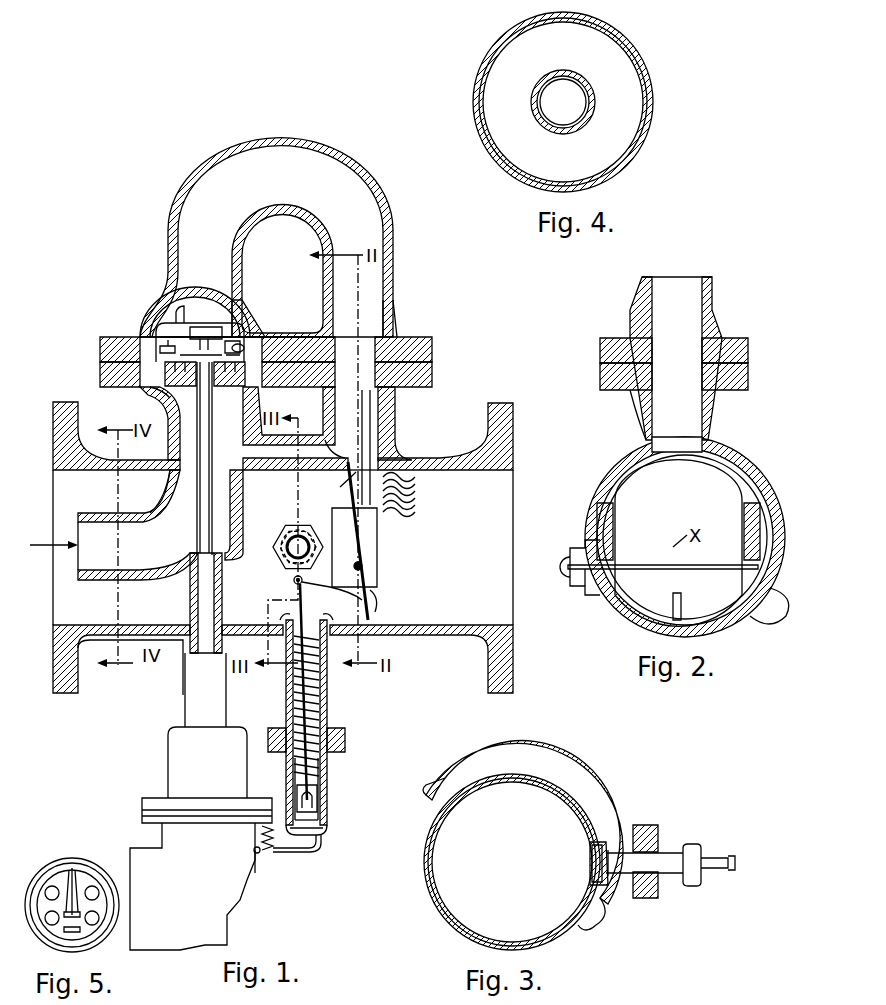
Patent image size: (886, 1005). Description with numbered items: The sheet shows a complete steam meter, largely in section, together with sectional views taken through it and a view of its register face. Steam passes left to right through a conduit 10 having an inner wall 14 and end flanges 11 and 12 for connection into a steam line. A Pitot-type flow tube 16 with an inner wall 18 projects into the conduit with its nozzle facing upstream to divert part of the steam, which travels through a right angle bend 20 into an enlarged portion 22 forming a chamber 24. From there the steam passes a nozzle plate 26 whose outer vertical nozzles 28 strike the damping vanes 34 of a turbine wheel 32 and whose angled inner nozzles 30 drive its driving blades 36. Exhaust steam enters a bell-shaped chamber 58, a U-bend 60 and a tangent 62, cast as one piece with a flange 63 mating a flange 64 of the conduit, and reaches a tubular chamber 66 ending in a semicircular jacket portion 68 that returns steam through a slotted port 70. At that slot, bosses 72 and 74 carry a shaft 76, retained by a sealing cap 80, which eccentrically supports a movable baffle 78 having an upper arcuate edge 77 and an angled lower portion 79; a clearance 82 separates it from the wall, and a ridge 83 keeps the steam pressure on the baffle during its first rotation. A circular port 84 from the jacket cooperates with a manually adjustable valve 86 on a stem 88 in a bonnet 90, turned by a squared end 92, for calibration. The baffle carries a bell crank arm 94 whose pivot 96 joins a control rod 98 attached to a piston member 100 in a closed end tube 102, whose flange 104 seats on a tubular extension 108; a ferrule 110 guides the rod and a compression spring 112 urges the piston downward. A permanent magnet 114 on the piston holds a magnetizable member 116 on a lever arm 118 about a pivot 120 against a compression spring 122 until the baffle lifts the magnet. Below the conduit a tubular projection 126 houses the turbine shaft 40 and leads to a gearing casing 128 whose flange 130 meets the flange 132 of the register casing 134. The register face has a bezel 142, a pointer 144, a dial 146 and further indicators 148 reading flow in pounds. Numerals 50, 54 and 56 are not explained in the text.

In FIG. 1, the conduit 10 is at (88, 641).
In FIG. 3, the conduit 10 is at (443, 908).
In FIG. 4, the conduit 10 is at (610, 170).
In FIG. 1, the flange 11 is at (53, 675).
In FIG. 1, the flange 12 is at (511, 655).
In FIG. 1, the inner wall 14 is at (165, 627).
In FIG. 3, the inner wall 14 is at (437, 885).
In FIG. 4, the inner wall 14 is at (631, 139).
In FIG. 1, the flow tube 16 is at (88, 522).
In FIG. 4, the flow tube 16 is at (590, 92).
In FIG. 1, the inner wall 18 is at (84, 524).
In FIG. 4, the inner wall 18 is at (585, 110).
In FIG. 1, the right angle bend 20 is at (175, 500).
In FIG. 1, the enlarged portion 22 is at (155, 402).
In FIG. 1, the chamber 24 is at (148, 392).
In FIG. 1, the nozzle plate 26 is at (143, 336).
In FIG. 1, the nozzles 28 is at (256, 348).
In FIG. 1, the inner peripheral nozzles 30 is at (218, 372).
In FIG. 1, the turbine wheel 32 is at (195, 348).
In FIG. 1, the damping vanes 34 is at (258, 337).
In FIG. 1, the driving blades 36 is at (148, 332).
In FIG. 1, the turbine shaft 40 is at (200, 612).
In FIG. 1, the dome cover 50 is at (238, 324).
In FIG. 1, the cover stud 54 is at (177, 315).
In FIG. 1, the valve stem 56 is at (197, 512).
In FIG. 1, the bell-shaped chamber 58 is at (247, 296).
In FIG. 1, the U-bend 60 is at (290, 143).
In FIG. 1, the tangent 62 is at (392, 320).
In FIG. 2, the tangent 62 is at (706, 313).
In FIG. 1, the flange 63 is at (422, 338).
In FIG. 2, the flange 63 is at (743, 350).
In FIG. 1, the mating flange 64 is at (427, 377).
In FIG. 2, the mating flange 64 is at (718, 388).
In FIG. 1, the tubular chamber 66 is at (399, 390).
In FIG. 2, the tubular chamber 66 is at (638, 380).
In FIG. 1, the semi-circular jacket portion 68 is at (321, 445).
In FIG. 2, the semi-circular jacket portion 68 is at (743, 467).
In FIG. 3, the semi-circular jacket portion 68 is at (578, 783).
In FIG. 1, the slotted port 70 is at (364, 460).
In FIG. 2, the slotted port 70 is at (735, 487).
In FIG. 2, the flattened boss 72 is at (757, 530).
In FIG. 2, the flattened boss 74 is at (590, 540).
In FIG. 1, the shaft 76 is at (361, 567).
In FIG. 2, the shaft 76 is at (590, 580).
In FIG. 1, the upper arcuate edge 77 is at (355, 484).
In FIG. 1, the movable baffle 78 is at (352, 526).
In FIG. 2, the movable baffle 78 is at (725, 543).
In FIG. 1, the lower portion 79 is at (372, 593).
In FIG. 2, the sealing cap 80 is at (562, 567).
In FIG. 1, the clearance 82 is at (348, 470).
In FIG. 2, the clearance 82 is at (723, 608).
In FIG. 1, the ridge 83 is at (405, 502).
In FIG. 1, the circular port 84 is at (292, 527).
In FIG. 3, the circular port 84 is at (592, 873).
In FIG. 3, the manually adjustable valve 86 is at (617, 833).
In FIG. 3, the stem 88 is at (633, 890).
In FIG. 3, the bonnet 90 is at (668, 857).
In FIG. 3, the squared end 92 is at (725, 863).
In FIG. 1, the bell crank arm 94 is at (330, 583).
In FIG. 1, the pivot 96 is at (293, 582).
In FIG. 1, the control rod 98 is at (287, 690).
In FIG. 1, the piston member 100 is at (325, 782).
In FIG. 1, the closed end tube 102 is at (321, 768).
In FIG. 1, the flange 104 is at (345, 740).
In FIG. 1, the tubular extension 108 is at (328, 708).
In FIG. 1, the ferrule 110 is at (287, 670).
In FIG. 1, the compression spring 112 is at (358, 773).
In FIG. 1, the permanent magnet 114 is at (322, 800).
In FIG. 1, the magnetizable member 116 is at (314, 823).
In FIG. 1, the lever arm 118 is at (297, 851).
In FIG. 1, the pivot 120 is at (255, 860).
In FIG. 1, the compression spring 122 is at (263, 851).
In FIG. 1, the tubular projection 126 is at (189, 672).
In FIG. 1, the casing 128 is at (175, 740).
In FIG. 1, the flange 130 is at (158, 800).
In FIG. 1, the flange 132 is at (143, 815).
In FIG. 1, the casing 134 is at (165, 847).
In FIG. 5, the bezel 142 is at (97, 941).
In FIG. 5, the pointer 144 is at (60, 880).
In FIG. 5, the dial 146 is at (47, 937).
In FIG. 5, the indicators 148 is at (100, 877).